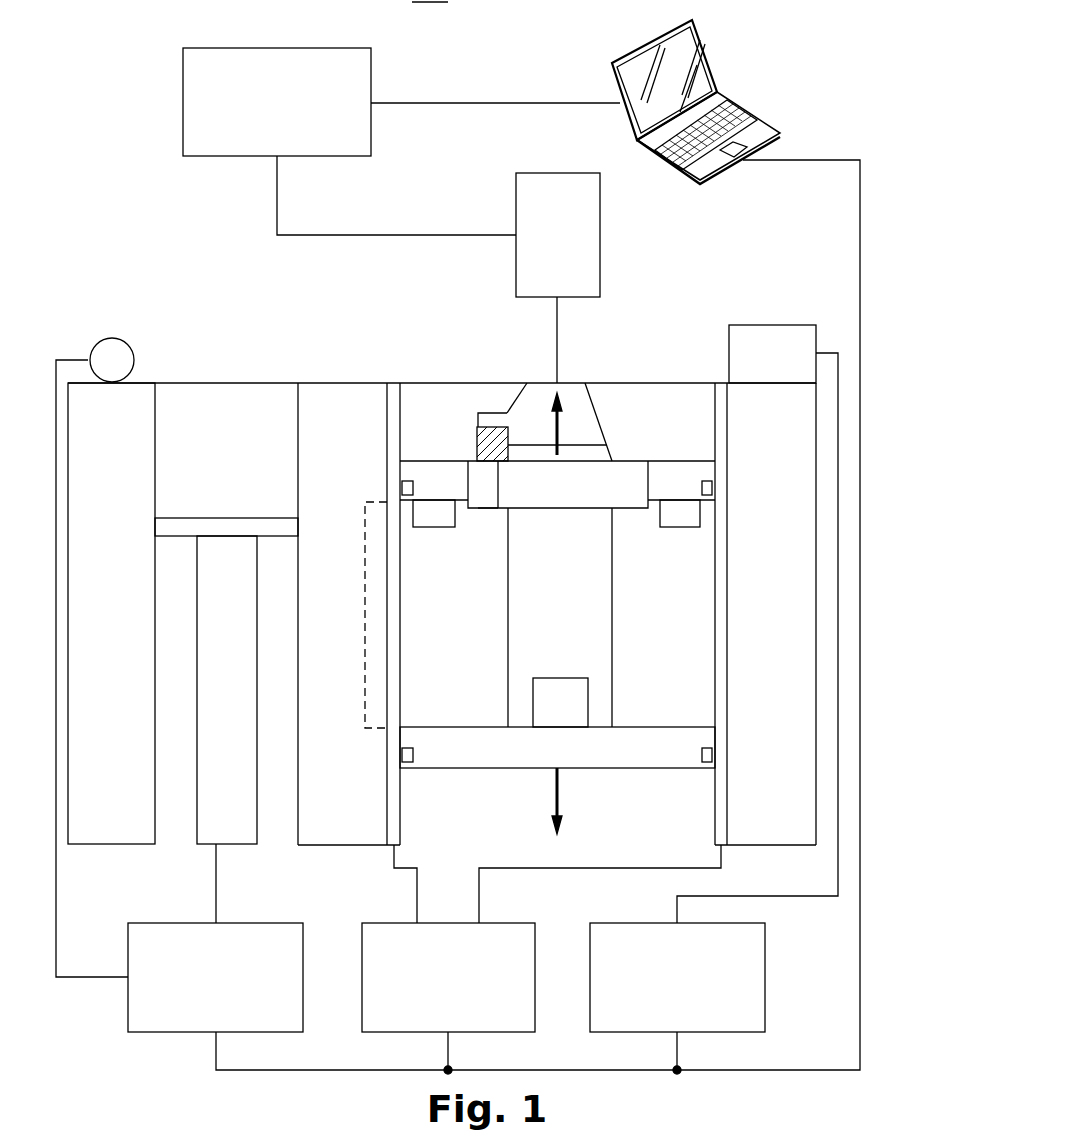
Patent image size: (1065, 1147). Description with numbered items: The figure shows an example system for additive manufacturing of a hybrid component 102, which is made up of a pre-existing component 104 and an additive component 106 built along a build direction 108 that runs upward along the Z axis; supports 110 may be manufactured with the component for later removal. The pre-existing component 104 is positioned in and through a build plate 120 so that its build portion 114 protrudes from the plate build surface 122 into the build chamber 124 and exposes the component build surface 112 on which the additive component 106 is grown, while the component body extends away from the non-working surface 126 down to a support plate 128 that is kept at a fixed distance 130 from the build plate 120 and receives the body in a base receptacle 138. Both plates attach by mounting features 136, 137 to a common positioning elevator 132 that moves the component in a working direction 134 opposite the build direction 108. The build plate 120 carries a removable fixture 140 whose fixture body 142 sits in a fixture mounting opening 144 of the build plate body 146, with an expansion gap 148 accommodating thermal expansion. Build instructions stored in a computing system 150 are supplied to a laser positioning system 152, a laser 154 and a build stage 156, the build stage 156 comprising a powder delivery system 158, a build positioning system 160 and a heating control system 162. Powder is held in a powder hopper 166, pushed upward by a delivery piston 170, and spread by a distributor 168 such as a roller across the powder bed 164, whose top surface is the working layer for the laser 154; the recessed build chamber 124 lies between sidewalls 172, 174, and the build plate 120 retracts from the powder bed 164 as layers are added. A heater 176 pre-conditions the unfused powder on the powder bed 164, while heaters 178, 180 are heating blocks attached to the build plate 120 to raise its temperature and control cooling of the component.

The hybrid component 102 is at (492, 368).
The pre-existing component 104 is at (515, 600).
The additive component 106 is at (570, 383).
The build direction 108 is at (560, 423).
The supports 110 is at (470, 440).
The component build surface 112 is at (595, 442).
The build portion 114 is at (595, 453).
The build plate 120 is at (715, 470).
The plate build surface 122 is at (420, 461).
The build chamber 124 is at (408, 383).
The non-working surface 126 is at (459, 508).
The support plate 128 is at (462, 732).
The fixed distance 130 is at (365, 577).
The positioning elevator 132 is at (393, 793).
The working direction 134 is at (562, 783).
The mounting features 136 is at (413, 753).
The mounting features 137 is at (415, 488).
The base receptacle 138 is at (573, 693).
The removable fixture 140 is at (623, 508).
The fixture body 142 is at (562, 497).
The fixture mounting opening 144 is at (462, 460).
The build plate body 146 is at (410, 470).
The expansion gap 148 is at (492, 502).
The computing system 150 is at (705, 43).
The laser positioning system 152 is at (371, 78).
The laser 154 is at (600, 255).
The build stage 156 is at (157, 270).
The powder delivery system 158 is at (188, 1033).
The build positioning system 160 is at (425, 1033).
The heating control system 162 is at (652, 1033).
The powder bed 164 is at (259, 367).
The powder hopper 166 is at (185, 457).
The distributor 168 is at (111, 338).
The delivery piston 170 is at (208, 846).
The sidewall 172 is at (393, 383).
The sidewall 174 is at (740, 395).
The heater 176 is at (787, 325).
The heater 178 is at (437, 530).
The heater 180 is at (670, 530).